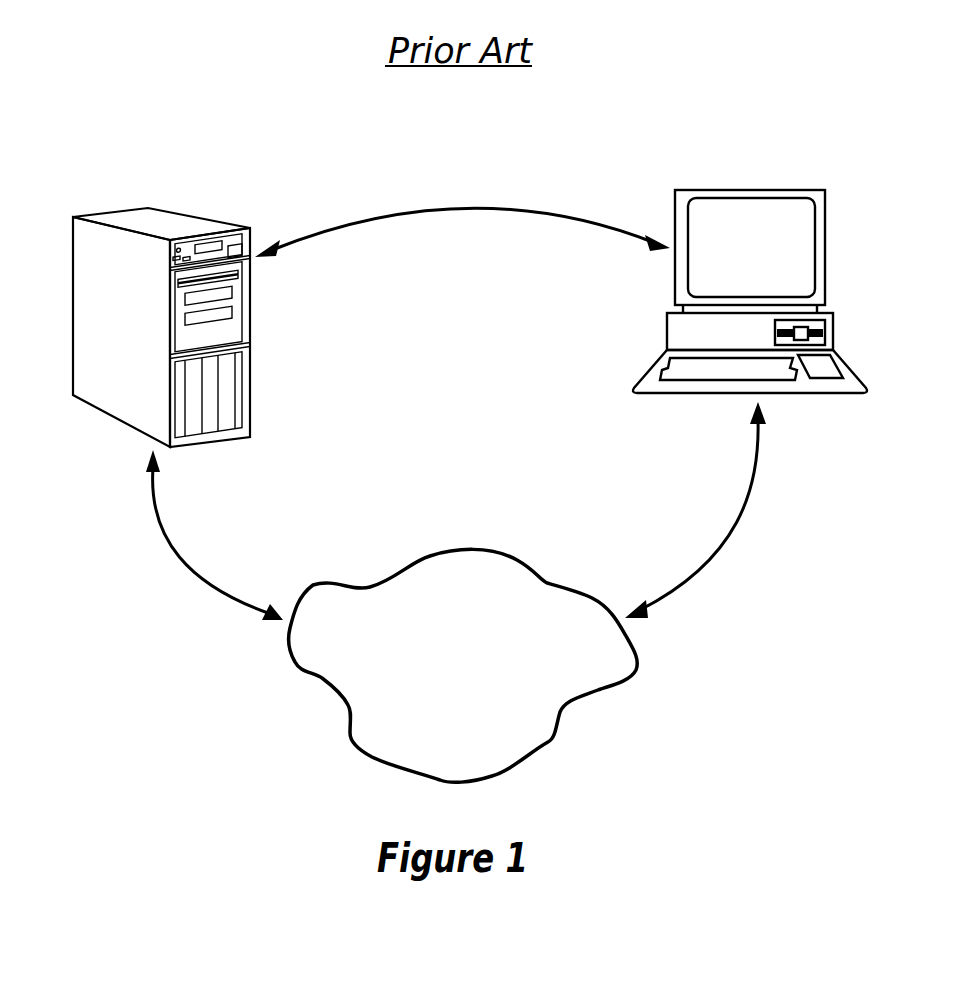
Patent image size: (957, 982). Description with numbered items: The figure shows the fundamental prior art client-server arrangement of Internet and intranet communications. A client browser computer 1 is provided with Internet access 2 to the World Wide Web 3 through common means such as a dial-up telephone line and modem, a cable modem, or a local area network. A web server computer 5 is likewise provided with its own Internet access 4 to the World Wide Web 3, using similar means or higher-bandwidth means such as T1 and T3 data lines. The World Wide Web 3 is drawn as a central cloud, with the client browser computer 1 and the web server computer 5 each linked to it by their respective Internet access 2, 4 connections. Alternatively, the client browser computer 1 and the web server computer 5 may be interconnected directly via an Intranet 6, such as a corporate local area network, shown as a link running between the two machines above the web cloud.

The client browser computer 1 is at (837, 303).
The Internet access 2 is at (700, 577).
The World Wide Web 3 is at (518, 563).
The Internet access 4 is at (192, 573).
The web server computer 5 is at (250, 347).
The Intranet 6 is at (467, 197).